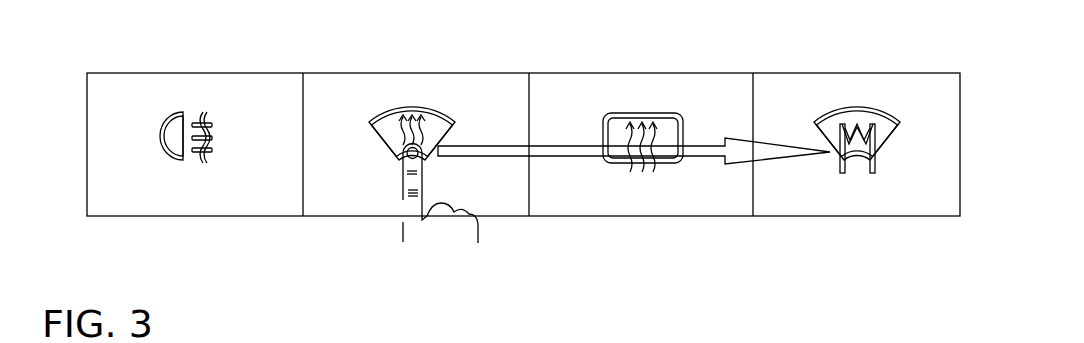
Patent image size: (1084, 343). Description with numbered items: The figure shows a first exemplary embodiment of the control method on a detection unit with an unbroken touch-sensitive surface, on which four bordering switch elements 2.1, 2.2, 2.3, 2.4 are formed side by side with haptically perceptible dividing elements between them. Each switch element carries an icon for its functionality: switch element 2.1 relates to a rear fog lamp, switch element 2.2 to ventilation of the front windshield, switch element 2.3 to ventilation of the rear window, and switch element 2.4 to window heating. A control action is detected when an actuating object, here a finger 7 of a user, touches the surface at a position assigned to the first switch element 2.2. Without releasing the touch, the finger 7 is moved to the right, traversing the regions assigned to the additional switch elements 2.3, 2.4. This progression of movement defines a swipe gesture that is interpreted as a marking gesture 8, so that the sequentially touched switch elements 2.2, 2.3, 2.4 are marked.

The switch element 2.1 is at (169, 107).
The switch element 2.2 is at (400, 107).
The switch element 2.3 is at (633, 107).
The switch element 2.4 is at (858, 107).
The finger 7 is at (410, 193).
The marking gesture 8 is at (742, 152).